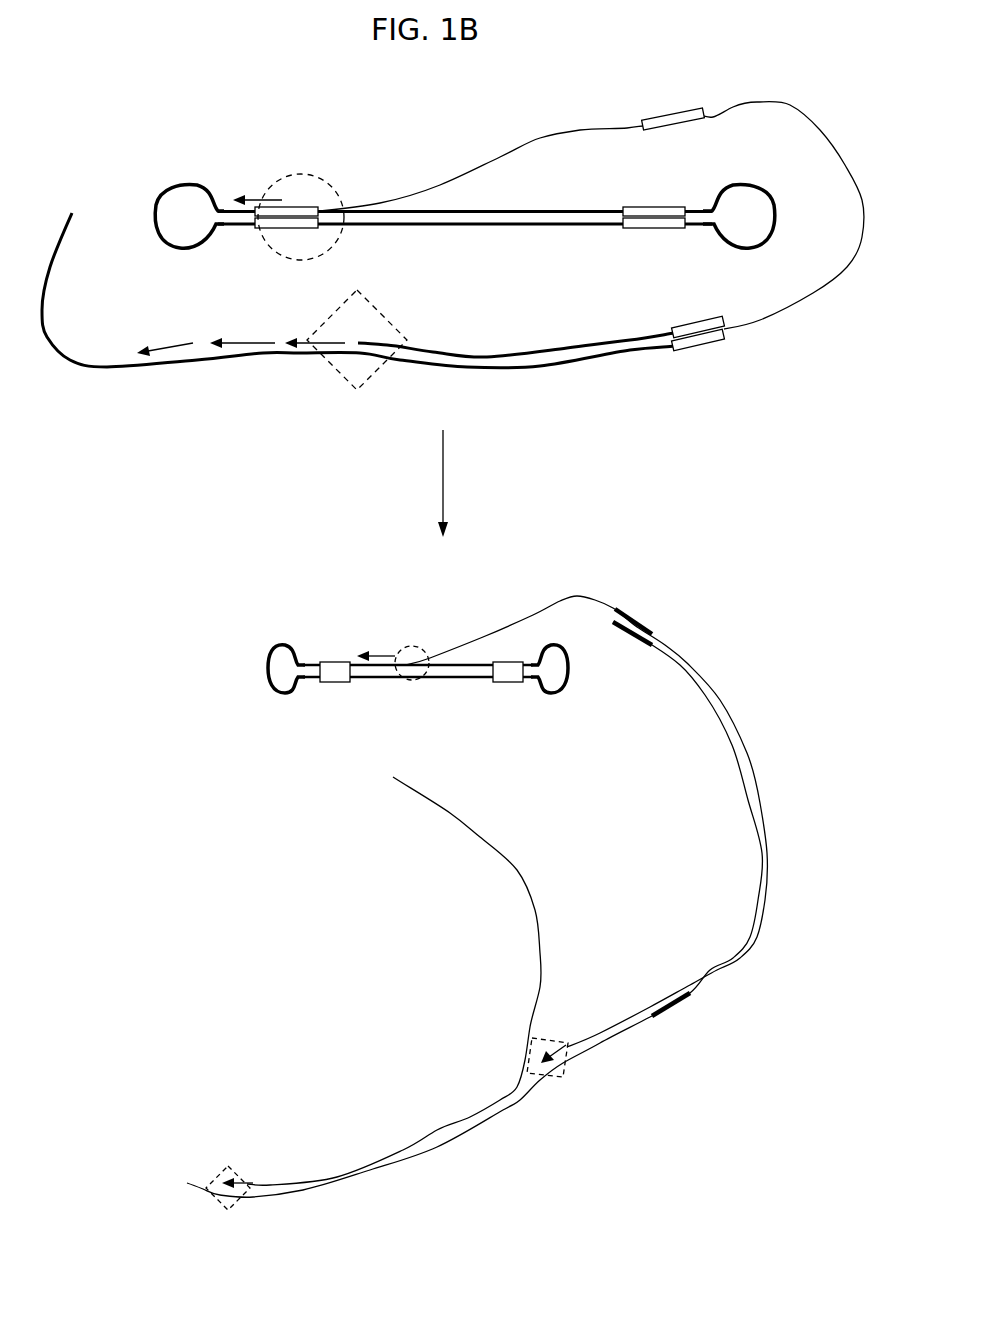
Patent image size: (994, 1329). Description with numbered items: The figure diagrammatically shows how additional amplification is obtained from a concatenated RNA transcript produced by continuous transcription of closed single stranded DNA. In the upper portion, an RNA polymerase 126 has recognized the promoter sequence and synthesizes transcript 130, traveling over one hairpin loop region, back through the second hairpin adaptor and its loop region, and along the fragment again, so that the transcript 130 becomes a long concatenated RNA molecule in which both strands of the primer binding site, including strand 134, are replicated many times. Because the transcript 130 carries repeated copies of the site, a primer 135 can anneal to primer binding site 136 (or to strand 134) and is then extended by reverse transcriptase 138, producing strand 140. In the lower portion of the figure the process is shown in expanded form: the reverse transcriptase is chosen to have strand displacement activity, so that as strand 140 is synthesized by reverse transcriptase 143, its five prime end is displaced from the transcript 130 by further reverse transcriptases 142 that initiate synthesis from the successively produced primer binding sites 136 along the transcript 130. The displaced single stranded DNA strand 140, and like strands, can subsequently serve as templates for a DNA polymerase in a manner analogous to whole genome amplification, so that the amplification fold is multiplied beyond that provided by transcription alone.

The RNA polymerase 126 is at (318, 175).
The transcript 130 is at (578, 595).
The strand of primer binding site 134 is at (677, 112).
The primer 135 is at (687, 318).
The primer binding site 136 is at (697, 343).
The reverse transcriptase 138 is at (333, 372).
The strand 140 is at (478, 837).
The reverse transcriptases 142 is at (563, 1077).
The reverse transcriptase 143 is at (235, 1208).